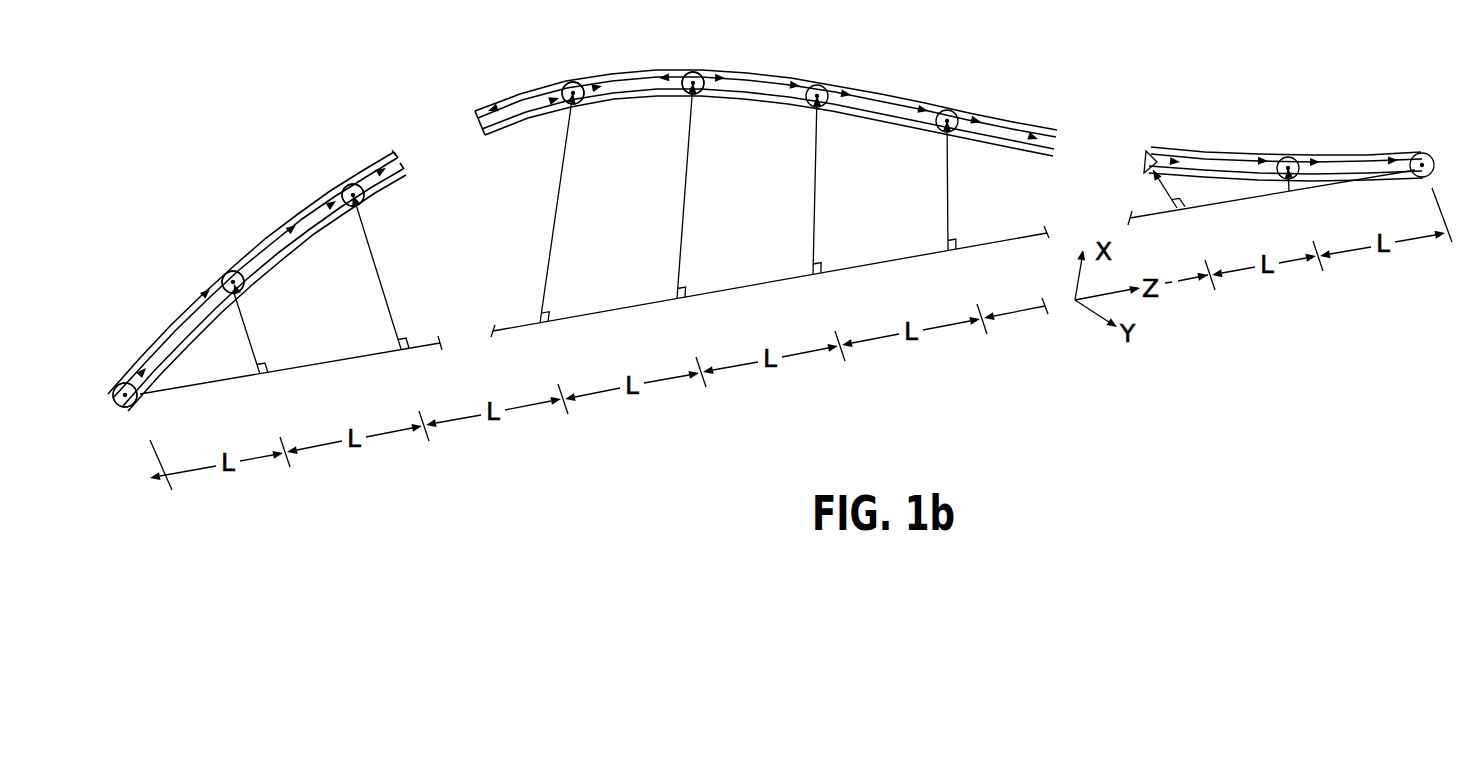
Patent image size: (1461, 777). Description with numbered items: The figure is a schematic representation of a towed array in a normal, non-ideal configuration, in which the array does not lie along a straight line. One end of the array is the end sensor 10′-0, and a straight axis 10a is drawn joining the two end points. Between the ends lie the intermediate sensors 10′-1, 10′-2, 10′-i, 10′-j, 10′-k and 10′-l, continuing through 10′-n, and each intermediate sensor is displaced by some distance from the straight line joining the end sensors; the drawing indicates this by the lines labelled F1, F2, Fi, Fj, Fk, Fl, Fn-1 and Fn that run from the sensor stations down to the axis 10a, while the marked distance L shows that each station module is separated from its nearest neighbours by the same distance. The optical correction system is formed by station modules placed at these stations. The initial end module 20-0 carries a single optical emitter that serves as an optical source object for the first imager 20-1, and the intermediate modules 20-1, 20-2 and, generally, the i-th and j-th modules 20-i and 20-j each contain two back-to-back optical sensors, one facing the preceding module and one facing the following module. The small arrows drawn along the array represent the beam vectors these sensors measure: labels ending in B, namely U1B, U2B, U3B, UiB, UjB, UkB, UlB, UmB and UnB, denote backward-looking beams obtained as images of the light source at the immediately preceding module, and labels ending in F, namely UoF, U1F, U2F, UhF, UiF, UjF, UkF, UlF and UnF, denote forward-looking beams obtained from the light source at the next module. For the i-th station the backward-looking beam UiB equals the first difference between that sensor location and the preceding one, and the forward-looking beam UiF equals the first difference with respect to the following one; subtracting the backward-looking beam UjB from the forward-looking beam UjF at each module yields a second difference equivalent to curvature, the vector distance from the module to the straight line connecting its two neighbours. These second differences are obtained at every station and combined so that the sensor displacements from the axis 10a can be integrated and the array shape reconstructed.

The initial end module 20-0 is at (117, 386).
The intermediate optical module 20-1 is at (226, 271).
The intermediate optical module 20-2 is at (349, 184).
The intermediate optical module 20-i is at (571, 82).
The station module 20-j is at (688, 71).
The end sensor 10′-0 is at (136, 406).
The intermediate sensor 10′-1 is at (243, 290).
The intermediate sensor 10′-2 is at (365, 201).
The intermediate sensor 10′-i is at (564, 104).
The intermediate sensor 10′-j is at (698, 72).
The intermediate sensor 10′-k is at (824, 86).
The intermediate sensor 10′-l is at (955, 110).
The intermediate sensor 10′-n is at (1292, 156).
The axis 10a is at (622, 314).
The focal length F1 is at (250, 333).
The focal length F2 is at (385, 290).
The force at node i Fi is at (552, 236).
The force at node j Fj is at (683, 220).
The force at node k Fk is at (814, 228).
The force at node l Fl is at (949, 212).
The force at node n-1 Fn-1 is at (1158, 186).
The force at node n Fn is at (1290, 182).
The forward-looking beam vector UoF is at (177, 327).
The backward-looking beam vector U1B is at (165, 352).
The forward-looking beam vector U1F is at (296, 258).
The backward-looking beam vector U2B is at (278, 237).
The forward-looking beam vector U2F is at (393, 192).
The backward-looking beam vector U3B is at (397, 150).
The backward-looking beam vector UiB is at (517, 106).
The forward-looking beam vector UhF is at (488, 132).
The forward-looking beam vector UiF is at (620, 76).
The backward-looking beam vector UjB is at (623, 104).
The forward-looking beam vector UjF is at (745, 97).
The backward-looking beam vector UkB is at (762, 79).
The forward-looking beam vector UkF is at (887, 100).
The backward-looking beam vector UlB is at (876, 117).
The forward-looking beam vector UlF is at (1013, 152).
The backward-looking beam vector UmB is at (1003, 130).
The backward-looking beam vector UnB is at (1203, 172).
The forward-looking beam vector UnF is at (1343, 178).